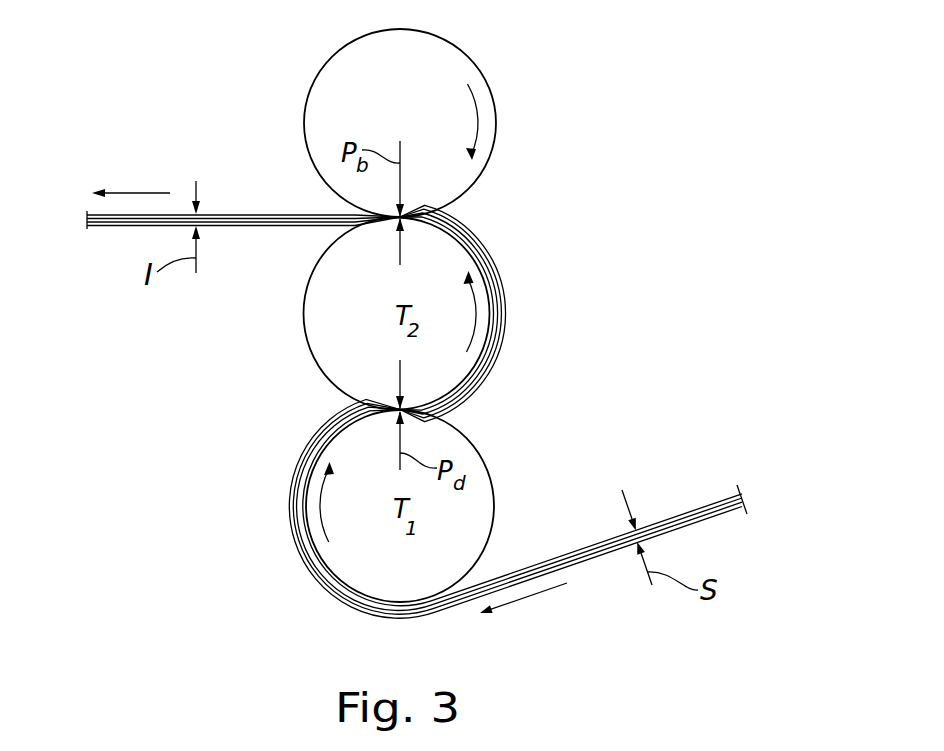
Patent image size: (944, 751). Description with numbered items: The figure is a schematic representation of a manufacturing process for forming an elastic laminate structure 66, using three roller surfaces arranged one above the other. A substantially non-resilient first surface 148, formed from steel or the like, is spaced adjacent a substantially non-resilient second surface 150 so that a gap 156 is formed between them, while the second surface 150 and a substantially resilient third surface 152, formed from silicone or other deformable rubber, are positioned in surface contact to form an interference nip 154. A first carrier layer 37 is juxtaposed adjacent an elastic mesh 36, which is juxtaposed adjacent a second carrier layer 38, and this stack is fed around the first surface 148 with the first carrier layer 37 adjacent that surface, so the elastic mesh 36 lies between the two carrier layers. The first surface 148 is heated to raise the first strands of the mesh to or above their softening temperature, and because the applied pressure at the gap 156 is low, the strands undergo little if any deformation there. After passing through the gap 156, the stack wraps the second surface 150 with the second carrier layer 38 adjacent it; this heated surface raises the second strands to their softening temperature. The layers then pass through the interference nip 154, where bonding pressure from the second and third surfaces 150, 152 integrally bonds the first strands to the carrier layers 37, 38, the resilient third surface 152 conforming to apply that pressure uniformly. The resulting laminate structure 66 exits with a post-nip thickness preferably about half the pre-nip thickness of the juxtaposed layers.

The third surface 152 is at (438, 52).
The second surface 150 is at (325, 295).
The first surface 148 is at (480, 527).
The interference nip 154 is at (338, 204).
The gap 156 is at (338, 402).
The laminate structure 66 is at (117, 228).
The elastic mesh 36 is at (742, 500).
The first carrier layer 37 is at (713, 497).
The second carrier layer 38 is at (707, 521).